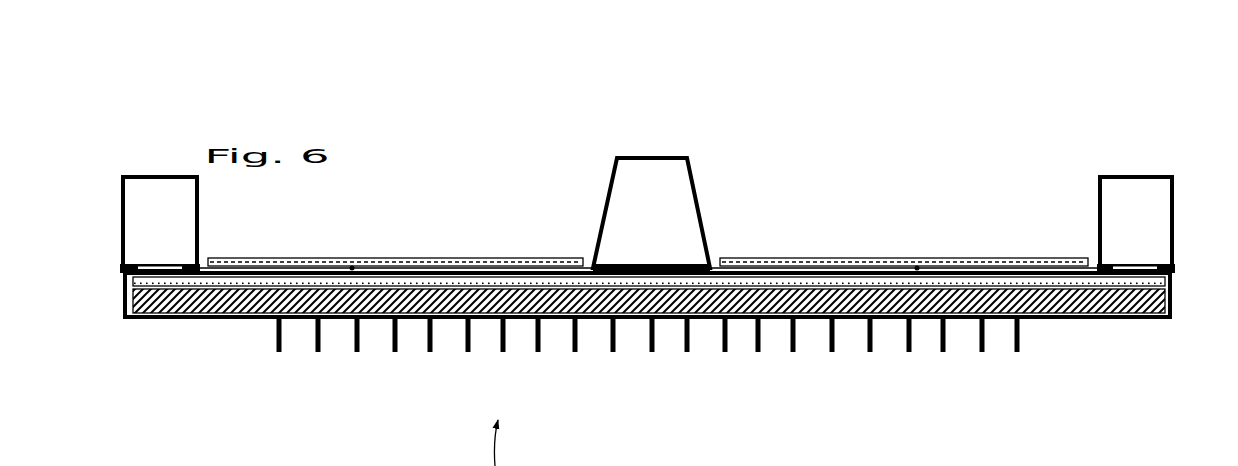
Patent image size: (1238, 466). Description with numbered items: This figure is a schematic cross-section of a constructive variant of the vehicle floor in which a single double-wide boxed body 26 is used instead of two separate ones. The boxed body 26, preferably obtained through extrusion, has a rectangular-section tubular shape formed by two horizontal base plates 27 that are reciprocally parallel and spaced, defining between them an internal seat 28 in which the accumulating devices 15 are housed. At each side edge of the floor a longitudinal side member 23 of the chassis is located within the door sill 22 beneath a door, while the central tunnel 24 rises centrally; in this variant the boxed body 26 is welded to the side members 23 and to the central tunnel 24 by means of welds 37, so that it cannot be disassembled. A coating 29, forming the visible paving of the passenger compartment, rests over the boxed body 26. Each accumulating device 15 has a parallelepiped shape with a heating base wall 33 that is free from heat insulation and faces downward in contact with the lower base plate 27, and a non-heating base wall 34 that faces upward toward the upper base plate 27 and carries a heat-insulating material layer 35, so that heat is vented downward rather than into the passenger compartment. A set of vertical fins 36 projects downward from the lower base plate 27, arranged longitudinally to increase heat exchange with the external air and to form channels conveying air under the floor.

The accumulating device 15 is at (418, 319).
The door sill 22 is at (166, 158).
The longitudinal side member 23 is at (134, 177).
The central tunnel 24 is at (657, 158).
The boxed body 26 is at (405, 207).
The base plate 27 is at (286, 268).
The internal seat 28 is at (457, 300).
The coating 29 is at (527, 258).
The heating base wall 33 is at (385, 320).
The non-heating base wall 34 is at (352, 266).
The heat-insulating material layer 35 is at (440, 283).
The vertical fins 36 is at (317, 319).
The weld 37 is at (200, 266).